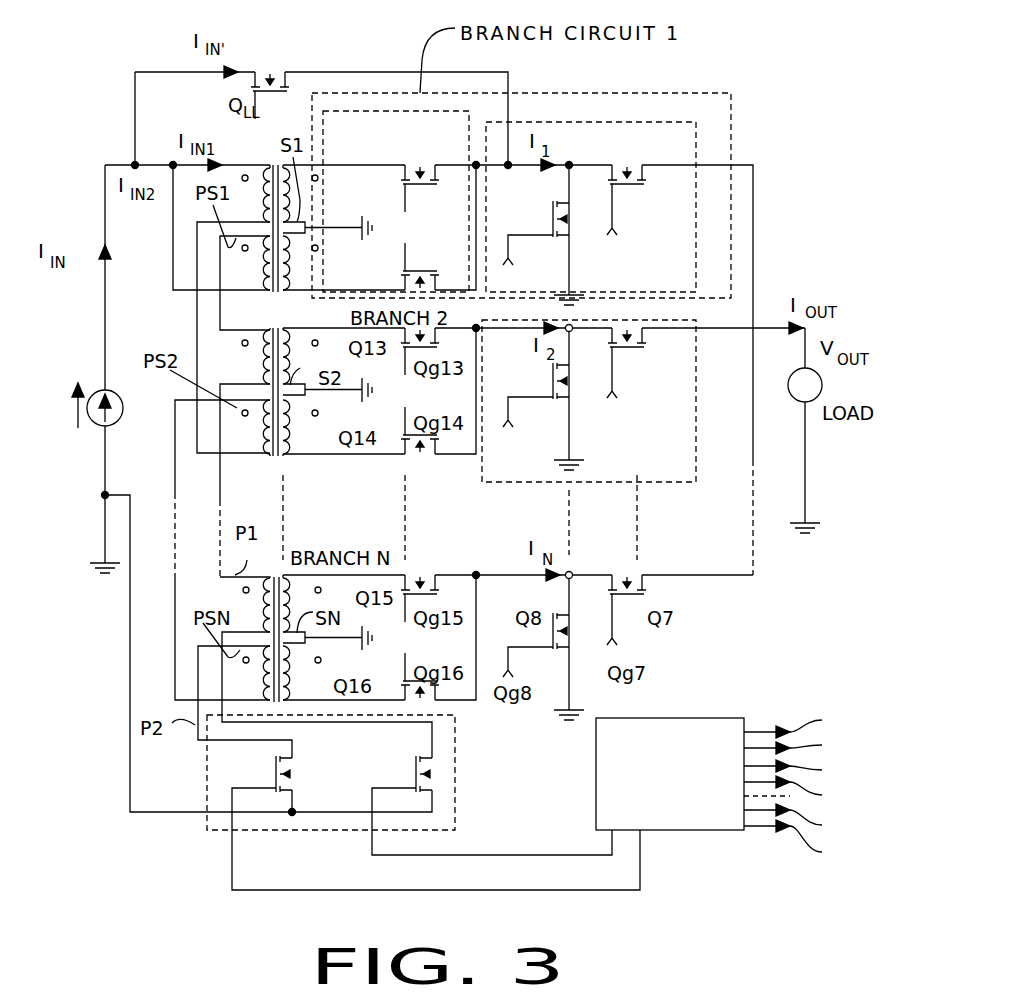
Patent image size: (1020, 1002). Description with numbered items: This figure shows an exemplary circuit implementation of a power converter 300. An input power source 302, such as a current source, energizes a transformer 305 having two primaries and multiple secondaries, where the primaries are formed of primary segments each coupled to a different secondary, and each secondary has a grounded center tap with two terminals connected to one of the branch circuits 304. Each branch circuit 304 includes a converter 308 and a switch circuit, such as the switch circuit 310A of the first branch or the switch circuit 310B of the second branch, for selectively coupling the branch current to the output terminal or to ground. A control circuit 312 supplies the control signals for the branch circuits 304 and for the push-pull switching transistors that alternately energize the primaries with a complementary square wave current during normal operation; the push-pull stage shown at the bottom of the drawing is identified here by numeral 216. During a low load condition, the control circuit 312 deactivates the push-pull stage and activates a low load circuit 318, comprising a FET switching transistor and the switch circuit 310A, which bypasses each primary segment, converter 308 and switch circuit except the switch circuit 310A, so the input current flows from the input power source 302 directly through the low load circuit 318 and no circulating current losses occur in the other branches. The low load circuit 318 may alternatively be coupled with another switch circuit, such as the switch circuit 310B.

The converter 300 is at (84, 22).
The input power source 302 is at (95, 388).
The branch circuits 304 is at (685, 93).
The transformer 305 is at (270, 160).
The converter 308 is at (325, 110).
The switch circuit 310A is at (697, 125).
The switch circuit 310B is at (660, 482).
The control circuit 312 is at (682, 718).
The primary switching circuit 216 is at (207, 830).
The low load circuit 318 is at (176, 72).